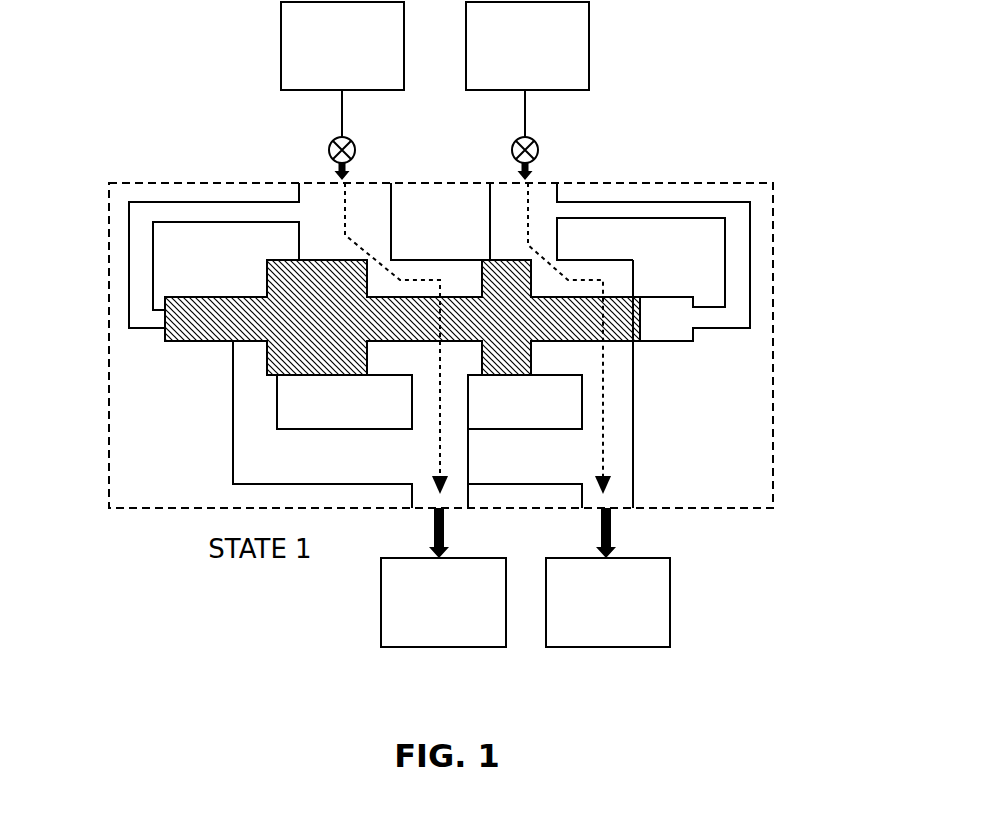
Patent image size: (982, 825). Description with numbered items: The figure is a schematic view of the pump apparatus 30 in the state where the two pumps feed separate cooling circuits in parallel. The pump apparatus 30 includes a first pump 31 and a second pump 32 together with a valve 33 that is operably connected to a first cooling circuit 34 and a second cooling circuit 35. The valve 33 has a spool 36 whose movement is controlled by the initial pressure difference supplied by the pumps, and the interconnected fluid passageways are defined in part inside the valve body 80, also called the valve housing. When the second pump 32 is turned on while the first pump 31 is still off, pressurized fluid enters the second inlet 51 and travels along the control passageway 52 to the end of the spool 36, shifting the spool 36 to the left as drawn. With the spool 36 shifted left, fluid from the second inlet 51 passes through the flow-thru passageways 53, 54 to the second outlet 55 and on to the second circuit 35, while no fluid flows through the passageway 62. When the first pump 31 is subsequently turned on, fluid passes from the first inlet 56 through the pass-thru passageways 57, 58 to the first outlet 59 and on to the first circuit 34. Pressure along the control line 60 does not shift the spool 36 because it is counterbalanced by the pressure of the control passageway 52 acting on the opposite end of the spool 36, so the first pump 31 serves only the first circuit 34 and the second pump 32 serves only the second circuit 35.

The pump apparatus 30 is at (117, 147).
The first pump 31 is at (353, 141).
The second pump 32 is at (536, 141).
The valve 33 is at (750, 518).
The first cooling circuit 34 is at (281, 43).
The second cooling circuit 35 is at (590, 47).
The spool 36 is at (280, 279).
The second inlet 51 is at (540, 190).
The control passageway 52 is at (667, 203).
The flow-thru passageway 53 is at (547, 237).
The flow-thru passageway 54 is at (620, 395).
The second outlet 55 is at (612, 497).
The first inlet 56 is at (366, 193).
The pass-thru passageway 57 is at (422, 268).
The pass-thru passageway 58 is at (427, 406).
The first outlet 59 is at (425, 497).
The control line 60 is at (205, 203).
The passageway 62 is at (243, 438).
The valve body 80 is at (642, 264).